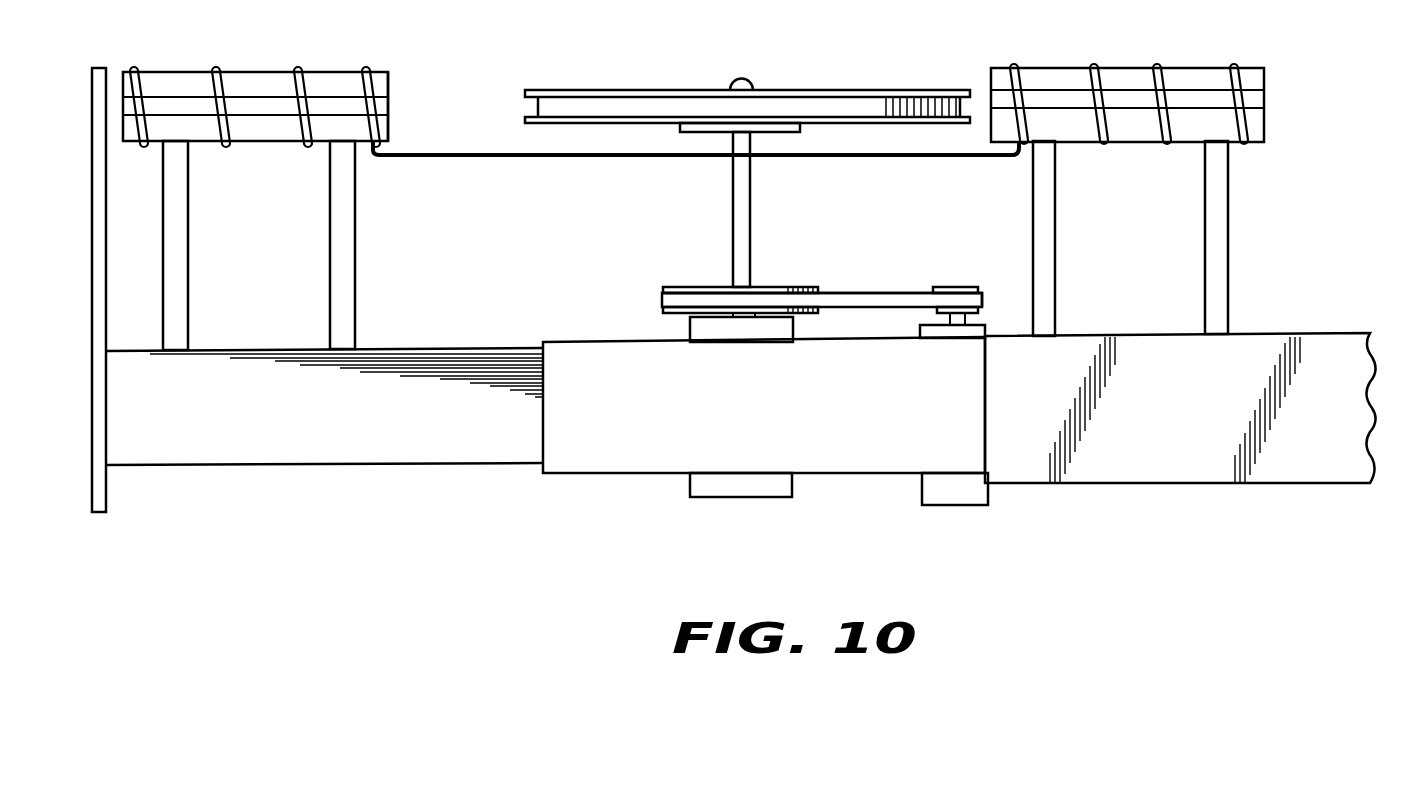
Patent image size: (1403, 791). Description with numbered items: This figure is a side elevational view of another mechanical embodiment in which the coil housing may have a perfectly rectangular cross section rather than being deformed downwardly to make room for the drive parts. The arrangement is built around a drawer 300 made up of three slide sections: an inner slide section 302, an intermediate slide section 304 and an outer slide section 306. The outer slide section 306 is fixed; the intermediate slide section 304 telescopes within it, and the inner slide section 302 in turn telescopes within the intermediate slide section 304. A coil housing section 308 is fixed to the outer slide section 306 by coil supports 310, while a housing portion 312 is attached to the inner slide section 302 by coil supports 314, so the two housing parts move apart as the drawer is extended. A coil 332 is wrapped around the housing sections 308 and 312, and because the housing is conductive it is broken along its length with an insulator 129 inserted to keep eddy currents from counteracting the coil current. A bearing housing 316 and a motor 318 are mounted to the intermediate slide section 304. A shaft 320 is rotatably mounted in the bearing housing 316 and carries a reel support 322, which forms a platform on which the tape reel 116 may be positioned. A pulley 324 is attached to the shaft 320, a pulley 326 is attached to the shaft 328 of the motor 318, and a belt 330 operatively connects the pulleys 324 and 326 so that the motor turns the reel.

The drawer 300 is at (197, 476).
The inner slide section 302 is at (365, 453).
The intermediate slide section 304 is at (833, 462).
The outer slide section 306 is at (1043, 485).
The coil housing section 308 is at (1265, 110).
The coil supports 310 is at (1212, 302).
The housing portion 312 is at (427, 60).
The coil supports 314 is at (333, 288).
The bearing housing 316 is at (707, 328).
The motor 318 is at (930, 327).
The shaft 320 is at (748, 224).
The reel support 322 is at (797, 133).
The pulley 324 is at (687, 287).
The pulley 326 is at (976, 287).
The shaft 328 is at (958, 283).
The belt 330 is at (840, 298).
The coil 332 is at (410, 150).
The insulator 129 is at (165, 103).
The tape reel 116 is at (858, 88).